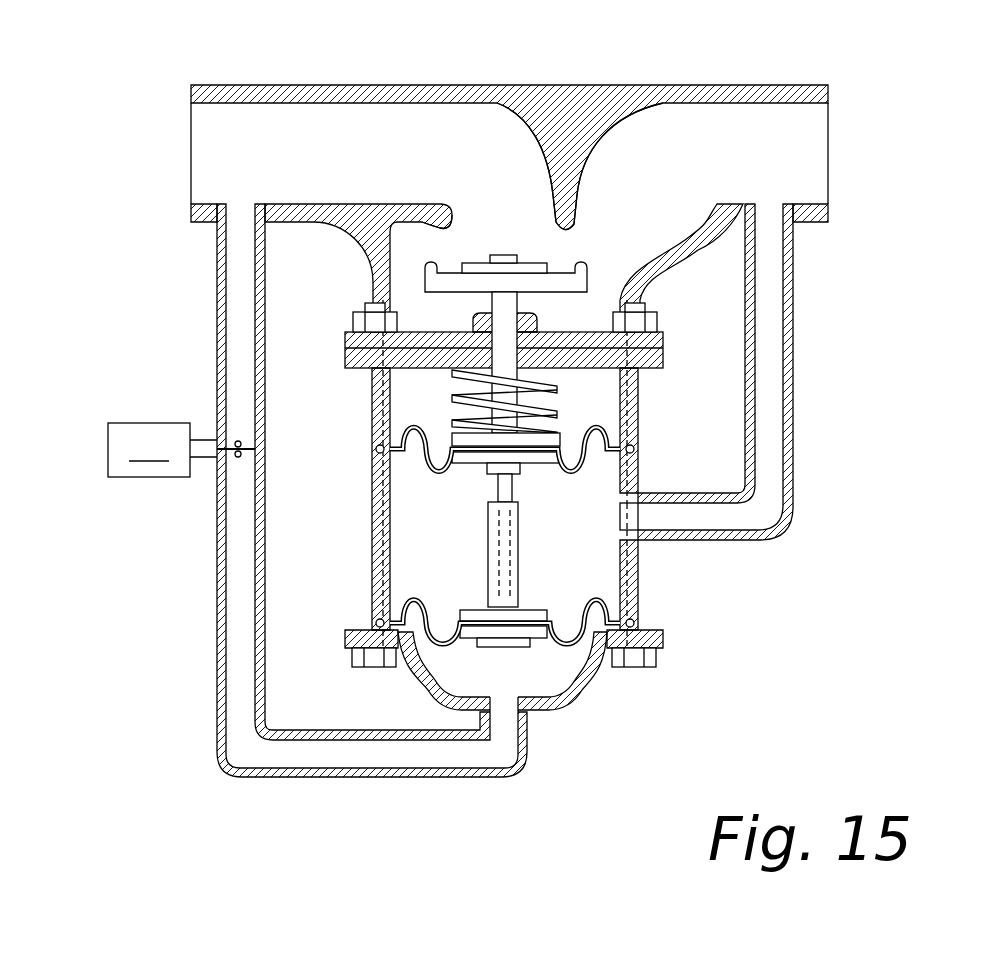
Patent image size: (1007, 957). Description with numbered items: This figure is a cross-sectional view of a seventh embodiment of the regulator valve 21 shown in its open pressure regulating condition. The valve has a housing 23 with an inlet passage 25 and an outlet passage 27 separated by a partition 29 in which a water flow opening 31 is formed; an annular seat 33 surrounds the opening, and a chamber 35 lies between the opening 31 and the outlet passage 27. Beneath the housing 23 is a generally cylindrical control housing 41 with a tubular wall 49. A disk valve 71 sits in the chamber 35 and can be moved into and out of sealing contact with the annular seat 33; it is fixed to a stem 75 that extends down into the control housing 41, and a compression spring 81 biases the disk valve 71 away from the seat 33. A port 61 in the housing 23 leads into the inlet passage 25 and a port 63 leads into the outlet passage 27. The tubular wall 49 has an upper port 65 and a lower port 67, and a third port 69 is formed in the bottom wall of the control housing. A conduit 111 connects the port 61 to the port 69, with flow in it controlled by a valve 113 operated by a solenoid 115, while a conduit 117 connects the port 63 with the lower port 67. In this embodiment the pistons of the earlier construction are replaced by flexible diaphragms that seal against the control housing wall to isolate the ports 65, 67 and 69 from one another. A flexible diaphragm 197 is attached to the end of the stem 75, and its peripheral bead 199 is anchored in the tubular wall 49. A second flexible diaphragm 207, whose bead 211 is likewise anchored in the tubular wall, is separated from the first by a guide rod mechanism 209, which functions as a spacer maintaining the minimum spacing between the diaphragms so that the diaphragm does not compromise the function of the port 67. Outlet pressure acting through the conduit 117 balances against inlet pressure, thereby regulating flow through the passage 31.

The regulator valve 21 is at (822, 308).
The housing 23 is at (565, 103).
The inlet passage 25 is at (227, 148).
The outlet passage 27 is at (802, 162).
The partition 29 is at (363, 204).
The water flow opening 31 is at (465, 233).
The annular seat 33 is at (566, 243).
The chamber 35 is at (435, 314).
The control housing 41 is at (757, 577).
The tubular wall 49 is at (392, 540).
The port 61 is at (260, 217).
The port 63 is at (793, 223).
The upper port 65 is at (638, 413).
The lower port 67 is at (635, 505).
The third port 69 is at (503, 700).
The disk valve 71 is at (586, 270).
The stem 75 is at (507, 302).
The compression spring 81 is at (543, 410).
The conduit 111 is at (280, 752).
The valve 113 is at (237, 452).
The solenoid 115 is at (149, 450).
The conduit 117 is at (768, 348).
The flexible diaphragm 197 is at (410, 433).
The bead 199 is at (376, 449).
The flexible diaphragm 207 is at (634, 623).
The guide rod mechanism 209 is at (518, 558).
The bead 211 is at (376, 623).